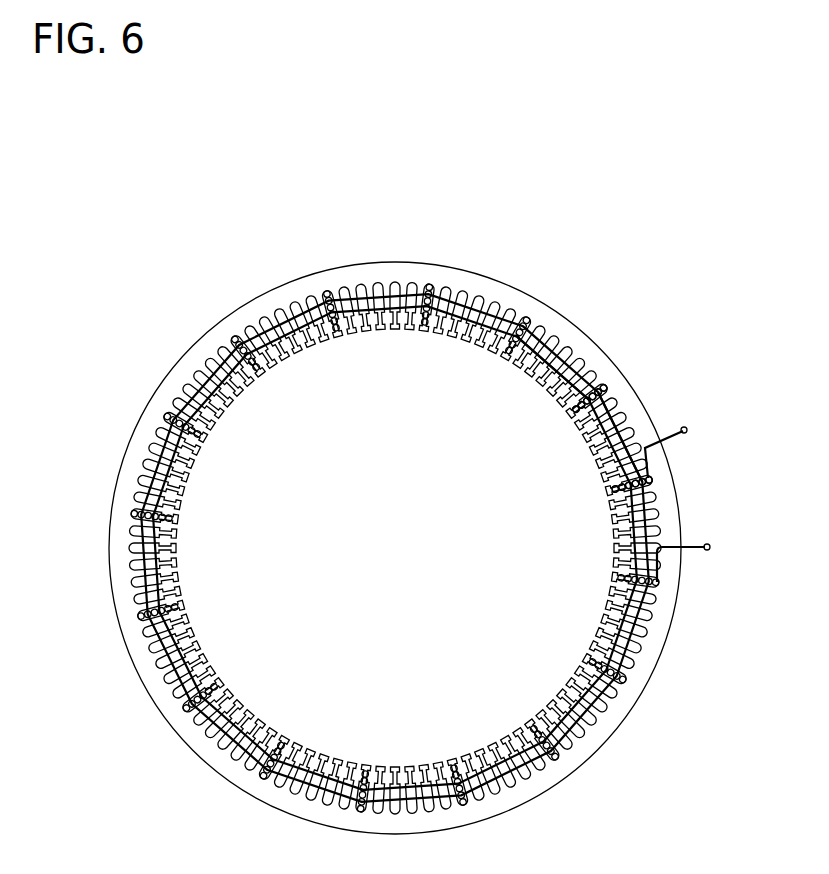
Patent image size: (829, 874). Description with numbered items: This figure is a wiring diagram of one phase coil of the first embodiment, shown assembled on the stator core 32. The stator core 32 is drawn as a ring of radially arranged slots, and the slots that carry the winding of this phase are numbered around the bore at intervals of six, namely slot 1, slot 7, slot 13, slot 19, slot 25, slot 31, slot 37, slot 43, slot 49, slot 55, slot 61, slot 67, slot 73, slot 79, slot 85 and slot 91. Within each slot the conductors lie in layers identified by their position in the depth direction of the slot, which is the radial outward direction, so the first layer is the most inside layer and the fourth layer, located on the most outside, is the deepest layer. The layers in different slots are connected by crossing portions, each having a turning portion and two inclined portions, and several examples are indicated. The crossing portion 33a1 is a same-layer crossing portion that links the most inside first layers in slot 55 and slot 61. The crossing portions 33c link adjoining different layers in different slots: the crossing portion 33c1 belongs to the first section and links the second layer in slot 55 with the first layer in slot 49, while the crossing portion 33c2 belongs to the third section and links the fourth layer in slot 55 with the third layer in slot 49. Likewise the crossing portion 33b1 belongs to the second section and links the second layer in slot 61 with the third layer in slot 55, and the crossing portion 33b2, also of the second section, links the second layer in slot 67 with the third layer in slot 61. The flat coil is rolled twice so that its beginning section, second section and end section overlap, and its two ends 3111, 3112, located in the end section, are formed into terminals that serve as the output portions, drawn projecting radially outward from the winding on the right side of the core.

The slot 1 is at (281, 743).
The slot 7 is at (213, 684).
The slot 13 is at (176, 604).
The slot 19 is at (170, 521).
The slot 25 is at (198, 437).
The slot 31 is at (257, 369).
The slot 37 is at (337, 330).
The slot 43 is at (423, 325).
The slot 49 is at (508, 352).
The slot 55 is at (575, 411).
The slot 61 is at (614, 492).
The slot 67 is at (619, 574).
The slot 73 is at (592, 659).
The slot 79 is at (533, 726).
The slot 85 is at (452, 765).
The slot 91 is at (367, 771).
The stator core 32 is at (648, 421).
The crossing portion 33a1 is at (598, 441).
The crossing portion 33b1 is at (638, 409).
The crossing portion 33b2 is at (661, 508).
The crossing portion 33c is at (481, 303).
The crossing portion 33c1 is at (546, 375).
The crossing portion 33c2 is at (589, 393).
The end 3111 is at (689, 443).
The end 3112 is at (698, 560).